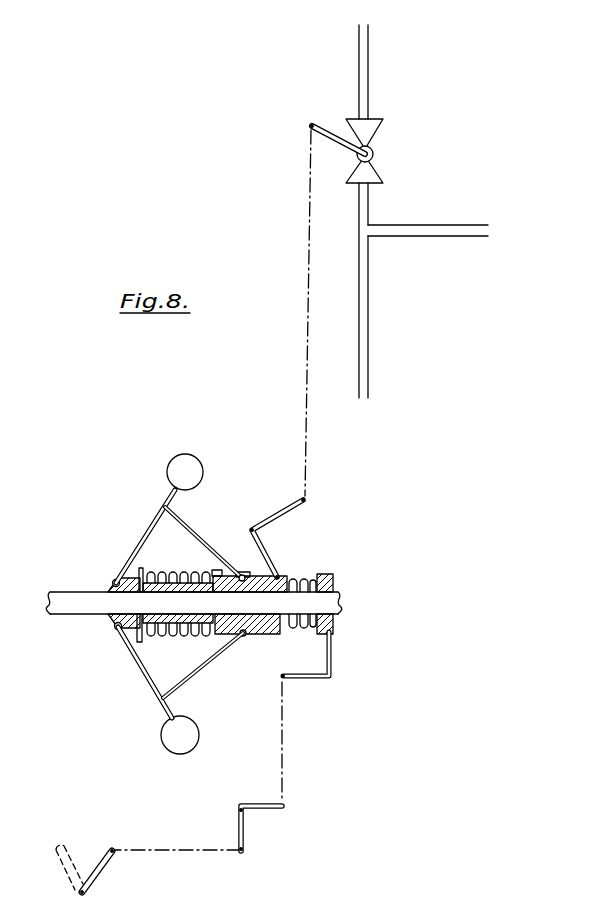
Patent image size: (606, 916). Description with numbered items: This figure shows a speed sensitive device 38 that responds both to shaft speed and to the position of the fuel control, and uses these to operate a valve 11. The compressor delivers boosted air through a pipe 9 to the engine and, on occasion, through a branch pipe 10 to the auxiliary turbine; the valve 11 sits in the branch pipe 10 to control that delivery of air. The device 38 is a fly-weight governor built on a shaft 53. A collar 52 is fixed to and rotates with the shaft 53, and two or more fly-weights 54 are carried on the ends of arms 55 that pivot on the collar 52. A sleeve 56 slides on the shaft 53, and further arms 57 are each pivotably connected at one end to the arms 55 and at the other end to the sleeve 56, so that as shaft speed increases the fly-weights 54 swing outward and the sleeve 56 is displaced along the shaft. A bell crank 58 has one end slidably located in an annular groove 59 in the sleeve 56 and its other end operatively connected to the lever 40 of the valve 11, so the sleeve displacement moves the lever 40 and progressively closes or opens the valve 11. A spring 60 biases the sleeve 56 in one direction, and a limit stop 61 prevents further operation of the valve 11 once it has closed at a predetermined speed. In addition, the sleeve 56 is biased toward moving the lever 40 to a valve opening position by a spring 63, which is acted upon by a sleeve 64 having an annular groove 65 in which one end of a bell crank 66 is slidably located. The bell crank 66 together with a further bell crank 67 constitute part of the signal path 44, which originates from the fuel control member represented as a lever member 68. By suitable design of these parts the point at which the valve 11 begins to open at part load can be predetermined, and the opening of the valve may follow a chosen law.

The pipe 9 is at (390, 237).
The branch pipe 10 is at (371, 60).
The valve 11 is at (383, 123).
The speed sensitive device 38 is at (152, 503).
The lever 40 is at (315, 122).
The signal path 44 is at (300, 719).
The collar 52 is at (113, 584).
The shaft 53 is at (70, 606).
The fly-weights 54 is at (198, 464).
The arms 55 is at (148, 531).
The sleeve 56 is at (257, 638).
The further arms 57 is at (215, 660).
The bell crank 58 is at (290, 509).
The annular groove 59 is at (278, 636).
The spring 60 is at (178, 636).
The limit stop 61 is at (138, 637).
The spring 63 is at (298, 578).
The sleeve 64 is at (333, 577).
The annular groove 65 is at (326, 574).
The bell crank 66 is at (332, 662).
The further bell crank 67 is at (268, 810).
The lever member 68 is at (111, 855).